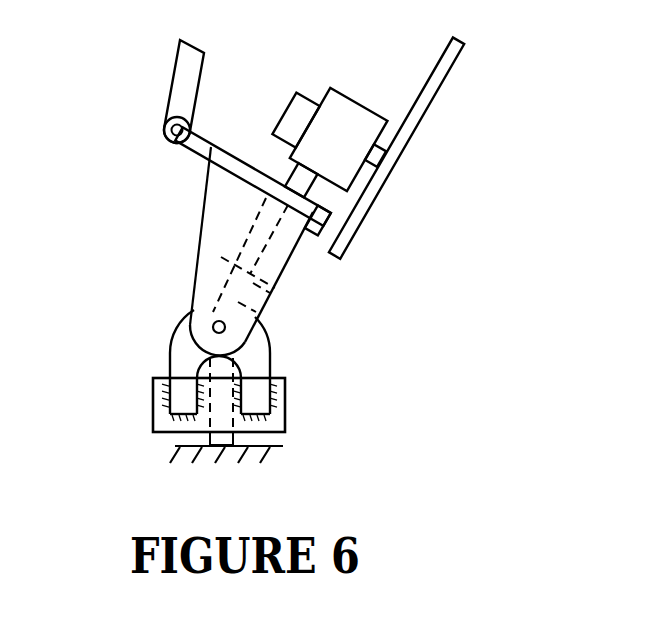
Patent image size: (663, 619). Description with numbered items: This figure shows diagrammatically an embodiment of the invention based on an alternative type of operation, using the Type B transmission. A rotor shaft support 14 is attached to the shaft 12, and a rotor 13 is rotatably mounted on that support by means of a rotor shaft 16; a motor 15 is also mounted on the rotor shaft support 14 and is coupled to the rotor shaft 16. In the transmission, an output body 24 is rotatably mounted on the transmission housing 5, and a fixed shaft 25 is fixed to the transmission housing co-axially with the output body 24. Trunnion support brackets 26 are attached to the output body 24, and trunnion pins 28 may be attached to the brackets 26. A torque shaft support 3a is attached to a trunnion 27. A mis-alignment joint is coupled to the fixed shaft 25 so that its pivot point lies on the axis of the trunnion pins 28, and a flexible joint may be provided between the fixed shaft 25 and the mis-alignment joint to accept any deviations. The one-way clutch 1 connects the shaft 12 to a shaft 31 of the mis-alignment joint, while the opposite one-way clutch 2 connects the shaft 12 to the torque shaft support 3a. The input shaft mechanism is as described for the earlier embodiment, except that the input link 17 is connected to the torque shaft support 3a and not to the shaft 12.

The one-way clutch 1 is at (271, 295).
The one-way clutch 2 is at (262, 190).
The torque shaft support 3a is at (205, 146).
The transmission housing 5 is at (266, 455).
The shaft 12 is at (247, 238).
The rotor 13 is at (447, 73).
The rotor shaft support 14 is at (354, 99).
The motor 15 is at (310, 88).
The rotor shaft 16 is at (394, 137).
The input link 17 is at (192, 80).
The output body 24 is at (288, 401).
The fixed shaft 25 is at (198, 445).
The trunnion support brackets 26 is at (262, 358).
The trunnion 27 is at (210, 286).
The trunnion pins 28 is at (184, 322).
The shaft of the mis-alignment joint 31 is at (252, 311).